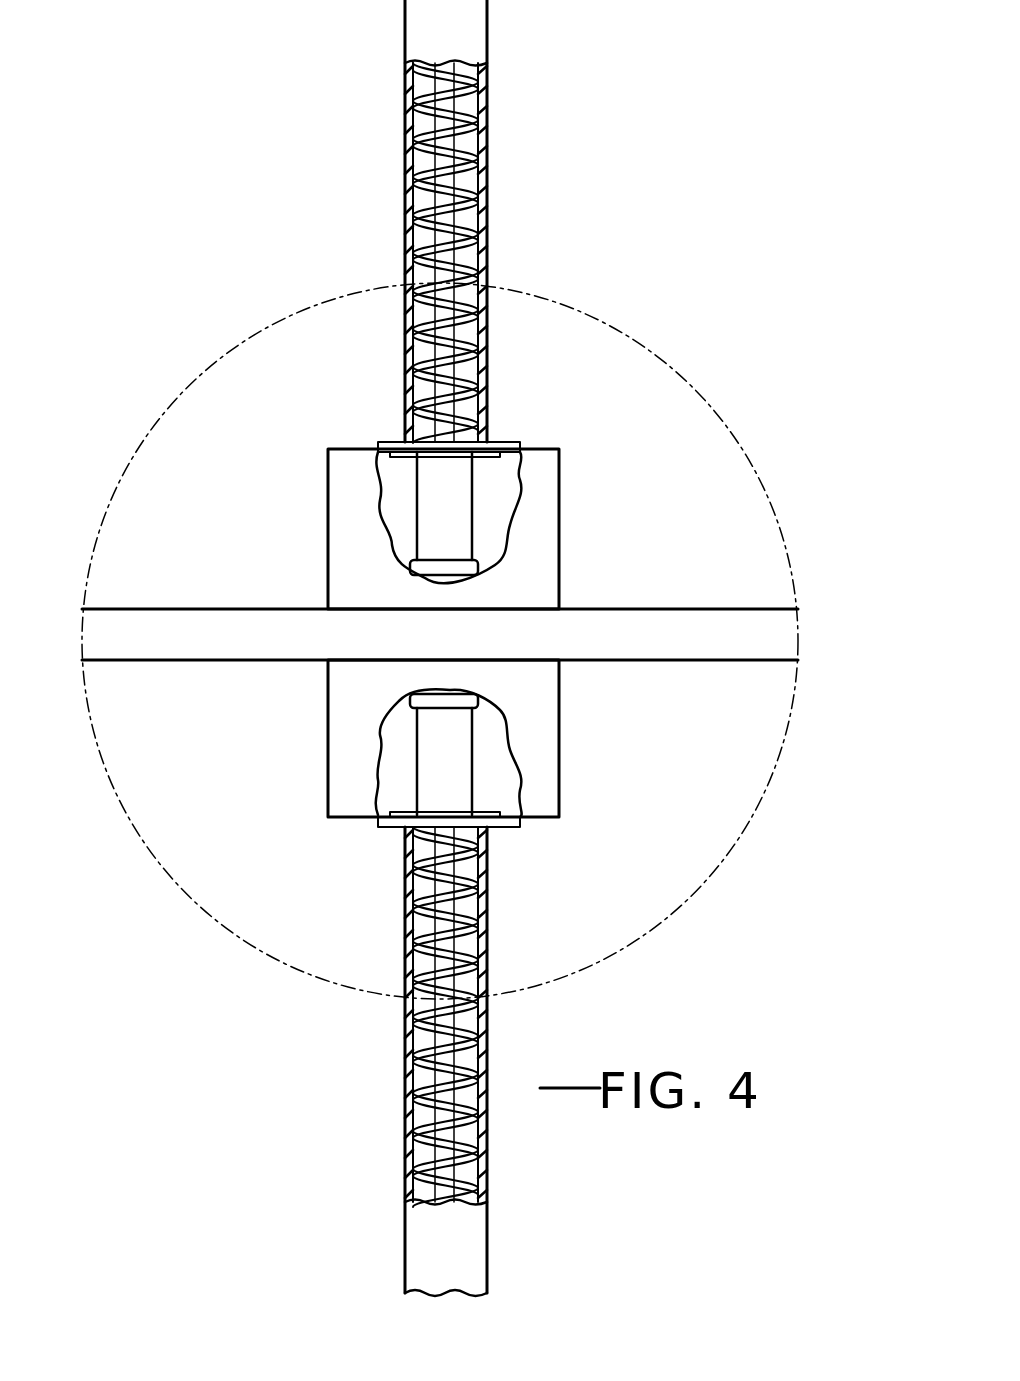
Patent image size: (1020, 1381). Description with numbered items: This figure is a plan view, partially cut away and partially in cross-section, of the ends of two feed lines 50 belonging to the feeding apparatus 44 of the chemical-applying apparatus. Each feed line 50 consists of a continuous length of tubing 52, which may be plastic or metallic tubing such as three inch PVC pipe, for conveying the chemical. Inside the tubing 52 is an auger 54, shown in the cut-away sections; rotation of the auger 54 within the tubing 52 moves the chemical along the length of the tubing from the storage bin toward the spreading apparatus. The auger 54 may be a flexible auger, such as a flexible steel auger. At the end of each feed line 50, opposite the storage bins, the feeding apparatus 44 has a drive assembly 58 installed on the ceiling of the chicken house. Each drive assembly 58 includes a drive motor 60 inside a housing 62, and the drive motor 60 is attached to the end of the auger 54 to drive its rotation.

The feeding apparatus 44 is at (223, 283).
The feed line 50 is at (458, 648).
The tubing 52 is at (487, 114).
The auger 54 is at (478, 222).
The drive assembly 58 is at (420, 626).
The drive motor 60 is at (442, 502).
The housing 62 is at (328, 555).